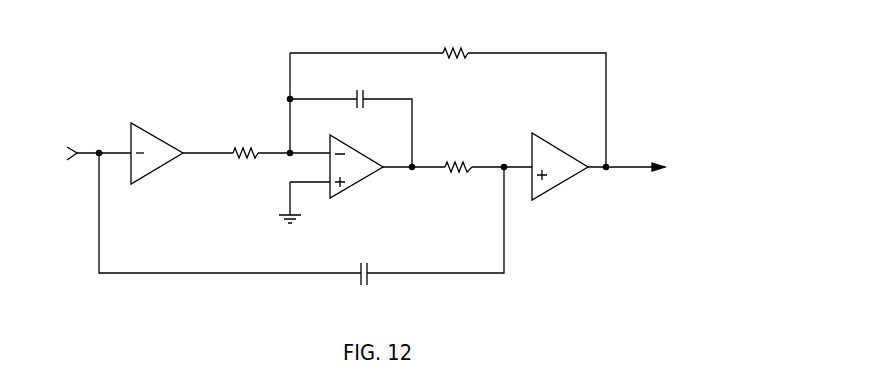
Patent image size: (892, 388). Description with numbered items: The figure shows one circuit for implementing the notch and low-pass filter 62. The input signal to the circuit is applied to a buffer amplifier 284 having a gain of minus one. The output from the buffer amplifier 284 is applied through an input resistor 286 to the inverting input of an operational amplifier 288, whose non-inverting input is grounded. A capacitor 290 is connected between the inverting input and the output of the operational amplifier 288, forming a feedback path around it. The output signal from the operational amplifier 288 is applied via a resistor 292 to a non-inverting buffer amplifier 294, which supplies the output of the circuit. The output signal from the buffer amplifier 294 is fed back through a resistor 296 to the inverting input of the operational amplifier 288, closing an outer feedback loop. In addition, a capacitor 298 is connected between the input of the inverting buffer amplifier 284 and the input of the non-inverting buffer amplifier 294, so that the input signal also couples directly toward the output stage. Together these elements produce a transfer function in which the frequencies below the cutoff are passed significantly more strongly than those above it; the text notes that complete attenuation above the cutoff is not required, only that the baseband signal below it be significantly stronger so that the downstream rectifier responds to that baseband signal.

The notch and low-pass filter 62 is at (224, 76).
The buffer amplifier 284 is at (147, 175).
The input resistor 286 is at (248, 147).
The operational amplifier 288 is at (359, 185).
The capacitor 290 is at (360, 87).
The resistor 292 is at (462, 162).
The non-inverting buffer amplifier 294 is at (558, 185).
The resistor 296 is at (458, 47).
The capacitor 298 is at (366, 262).